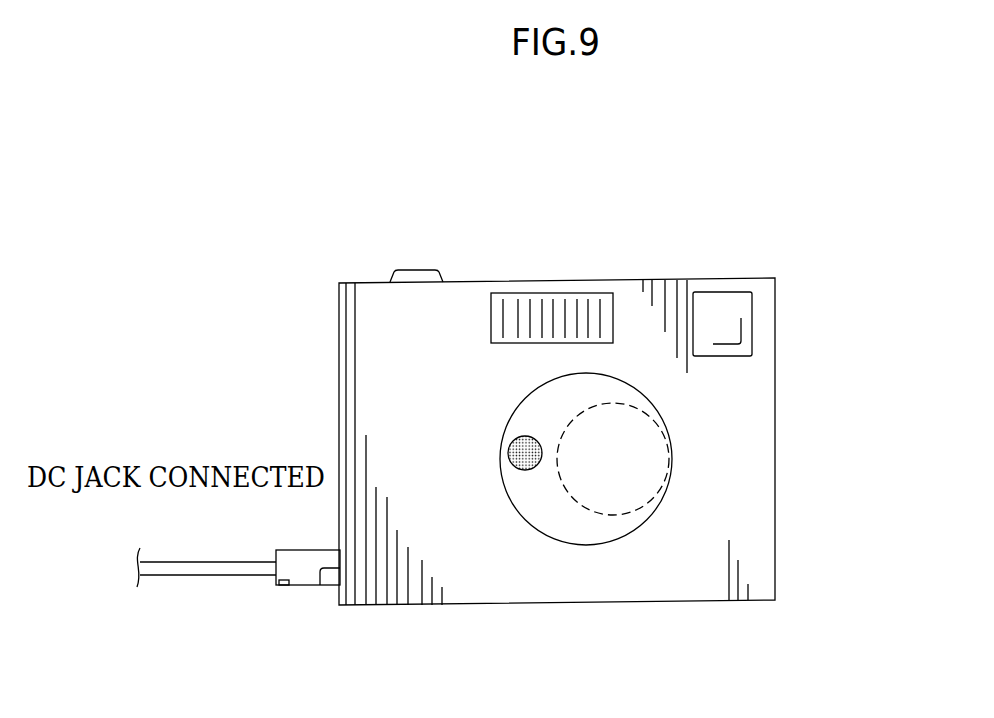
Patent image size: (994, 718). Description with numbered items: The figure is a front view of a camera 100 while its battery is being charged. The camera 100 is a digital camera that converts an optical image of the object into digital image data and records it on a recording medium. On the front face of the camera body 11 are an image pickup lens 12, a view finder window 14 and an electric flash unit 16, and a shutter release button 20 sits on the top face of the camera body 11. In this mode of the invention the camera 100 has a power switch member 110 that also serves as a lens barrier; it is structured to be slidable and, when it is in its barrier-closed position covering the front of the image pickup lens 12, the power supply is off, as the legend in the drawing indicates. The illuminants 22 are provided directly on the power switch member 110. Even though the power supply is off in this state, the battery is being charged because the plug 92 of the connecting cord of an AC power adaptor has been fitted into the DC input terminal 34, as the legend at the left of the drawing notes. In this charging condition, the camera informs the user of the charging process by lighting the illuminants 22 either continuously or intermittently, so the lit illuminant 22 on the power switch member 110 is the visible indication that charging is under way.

The camera 100 is at (538, 272).
The camera body 11 is at (749, 563).
The image pickup lens 12 is at (662, 463).
The view finder window 14 is at (718, 306).
The electric flash unit 16 is at (567, 300).
The shutter release button 20 is at (414, 276).
The illuminant 22 is at (528, 455).
The DC input terminal 34 is at (319, 585).
The plug 92 is at (291, 576).
The power switch member 110 is at (516, 513).